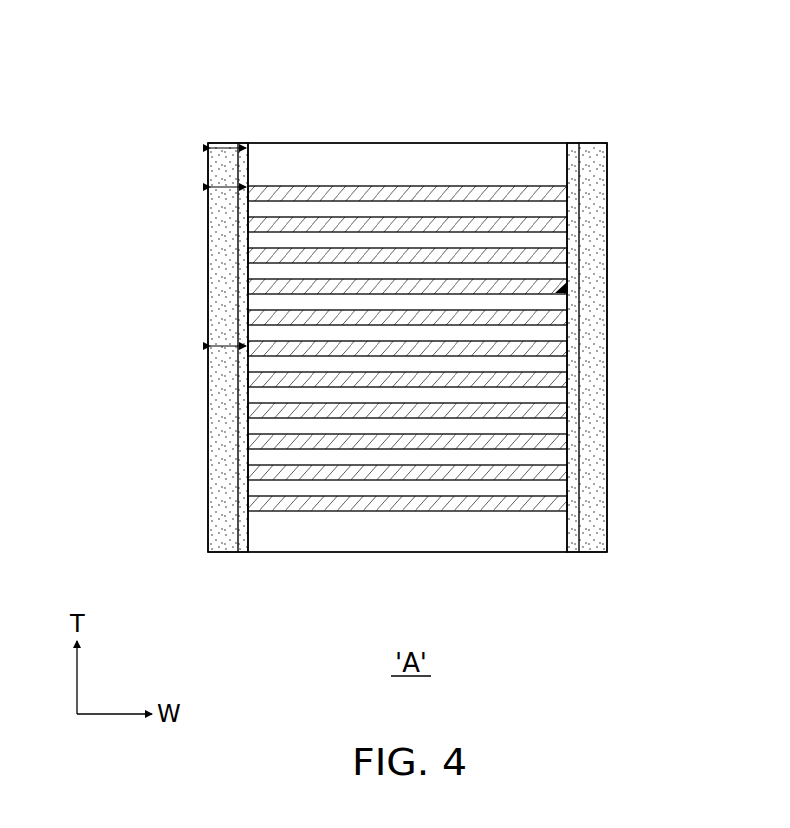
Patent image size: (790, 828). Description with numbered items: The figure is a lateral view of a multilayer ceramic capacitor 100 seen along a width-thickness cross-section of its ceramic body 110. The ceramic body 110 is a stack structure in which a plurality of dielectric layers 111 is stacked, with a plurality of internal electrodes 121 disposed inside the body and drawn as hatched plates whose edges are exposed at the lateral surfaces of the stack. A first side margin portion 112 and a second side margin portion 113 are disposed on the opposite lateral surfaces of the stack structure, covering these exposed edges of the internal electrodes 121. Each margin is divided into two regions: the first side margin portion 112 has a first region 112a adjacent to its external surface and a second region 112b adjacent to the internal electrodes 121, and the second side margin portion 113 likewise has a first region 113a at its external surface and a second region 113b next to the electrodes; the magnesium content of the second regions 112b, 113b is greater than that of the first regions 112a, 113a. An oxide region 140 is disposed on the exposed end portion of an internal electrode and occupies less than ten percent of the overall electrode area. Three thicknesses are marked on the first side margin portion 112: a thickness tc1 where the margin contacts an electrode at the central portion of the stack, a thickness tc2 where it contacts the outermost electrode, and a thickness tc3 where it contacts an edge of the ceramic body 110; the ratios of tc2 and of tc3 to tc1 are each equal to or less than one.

The multilayer ceramic capacitor 100 is at (446, 28).
The ceramic body 110 is at (465, 143).
The dielectric layers 111 is at (568, 245).
The first side margin portion 112 is at (253, 407).
The first region of the first side margin portion 112a is at (222, 553).
The second region of the first side margin portion 112b is at (243, 553).
The second side margin portion 113 is at (576, 407).
The first region of the second side margin portion 113a is at (600, 553).
The second region of the second side margin portion 113b is at (572, 553).
The internal electrodes 121 is at (568, 229).
The oxide region 140 is at (562, 288).
The thickness tc1 is at (228, 349).
The thickness tc2 is at (228, 190).
The thickness tc3 is at (228, 151).